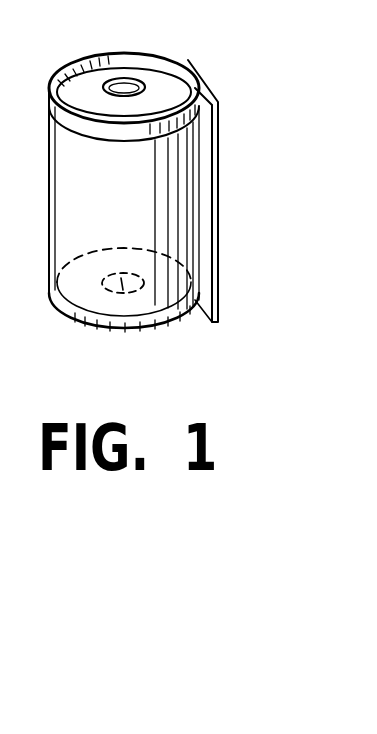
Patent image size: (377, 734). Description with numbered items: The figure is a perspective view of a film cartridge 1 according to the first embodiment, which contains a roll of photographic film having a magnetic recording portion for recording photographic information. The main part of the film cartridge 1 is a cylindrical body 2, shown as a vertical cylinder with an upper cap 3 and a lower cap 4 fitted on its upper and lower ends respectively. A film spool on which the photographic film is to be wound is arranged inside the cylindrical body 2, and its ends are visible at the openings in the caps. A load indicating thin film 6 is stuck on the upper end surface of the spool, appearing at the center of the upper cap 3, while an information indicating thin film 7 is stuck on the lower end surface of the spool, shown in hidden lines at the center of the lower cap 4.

The film cartridge 1 is at (262, 183).
The cylindrical body 2 is at (60, 220).
The upper cap 3 is at (170, 86).
The lower cap 4 is at (107, 327).
The load indicating thin film 6 is at (123, 84).
The information indicating thin film 7 is at (123, 293).